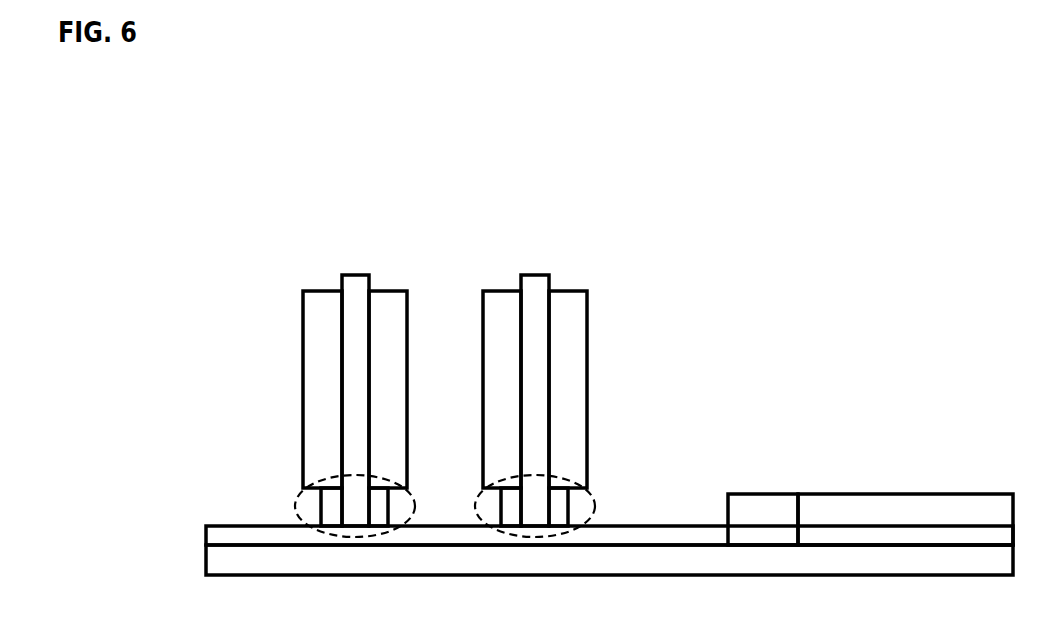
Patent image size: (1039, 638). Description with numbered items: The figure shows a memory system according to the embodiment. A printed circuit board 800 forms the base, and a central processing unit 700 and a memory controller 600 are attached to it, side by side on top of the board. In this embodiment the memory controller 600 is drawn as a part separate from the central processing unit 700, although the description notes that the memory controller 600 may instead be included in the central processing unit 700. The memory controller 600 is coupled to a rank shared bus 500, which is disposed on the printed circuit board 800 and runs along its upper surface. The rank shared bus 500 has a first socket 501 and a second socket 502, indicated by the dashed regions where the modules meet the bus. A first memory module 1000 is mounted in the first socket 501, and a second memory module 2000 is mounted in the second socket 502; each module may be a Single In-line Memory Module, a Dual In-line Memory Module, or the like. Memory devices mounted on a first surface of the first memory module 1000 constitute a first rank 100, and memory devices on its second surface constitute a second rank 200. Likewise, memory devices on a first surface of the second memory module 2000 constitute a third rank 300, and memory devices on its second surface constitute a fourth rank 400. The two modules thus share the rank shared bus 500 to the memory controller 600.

The first rank 100 is at (565, 289).
The second rank 200 is at (500, 289).
The third rank 300 is at (385, 289).
The fourth rank 400 is at (322, 289).
The first memory module 1000 is at (602, 218).
The second memory module 2000 is at (422, 218).
The rank shared bus 500 is at (685, 526).
The first socket 501 is at (587, 492).
The second socket 502 is at (300, 494).
The memory controller 600 is at (760, 494).
The central processing unit 700 is at (900, 494).
The printed circuit board 800 is at (577, 575).